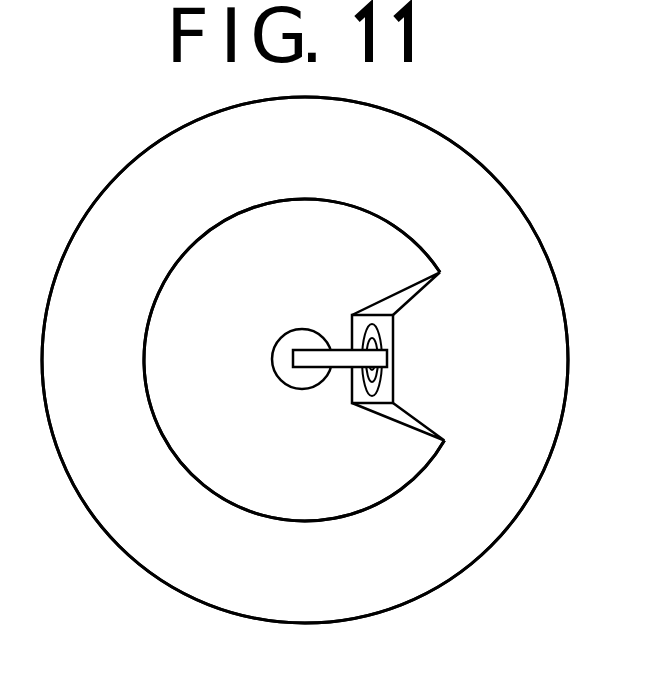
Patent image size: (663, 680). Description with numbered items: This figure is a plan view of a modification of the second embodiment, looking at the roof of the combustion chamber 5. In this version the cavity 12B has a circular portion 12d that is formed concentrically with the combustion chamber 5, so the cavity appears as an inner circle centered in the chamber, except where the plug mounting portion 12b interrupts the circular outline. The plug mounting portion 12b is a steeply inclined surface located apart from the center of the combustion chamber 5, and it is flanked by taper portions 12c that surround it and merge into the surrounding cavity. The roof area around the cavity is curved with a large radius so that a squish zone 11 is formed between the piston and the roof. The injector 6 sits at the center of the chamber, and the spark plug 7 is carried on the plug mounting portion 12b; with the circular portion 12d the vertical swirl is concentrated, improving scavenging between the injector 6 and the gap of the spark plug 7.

The combustion chamber 5 is at (499, 214).
The squish zone 11 is at (373, 585).
The cavity 12B is at (250, 405).
The circular portion 12d is at (240, 495).
The taper portions 12c is at (402, 418).
The plug mounting portion 12b is at (388, 388).
The injector 6 is at (294, 337).
The spark plug 7 is at (340, 355).